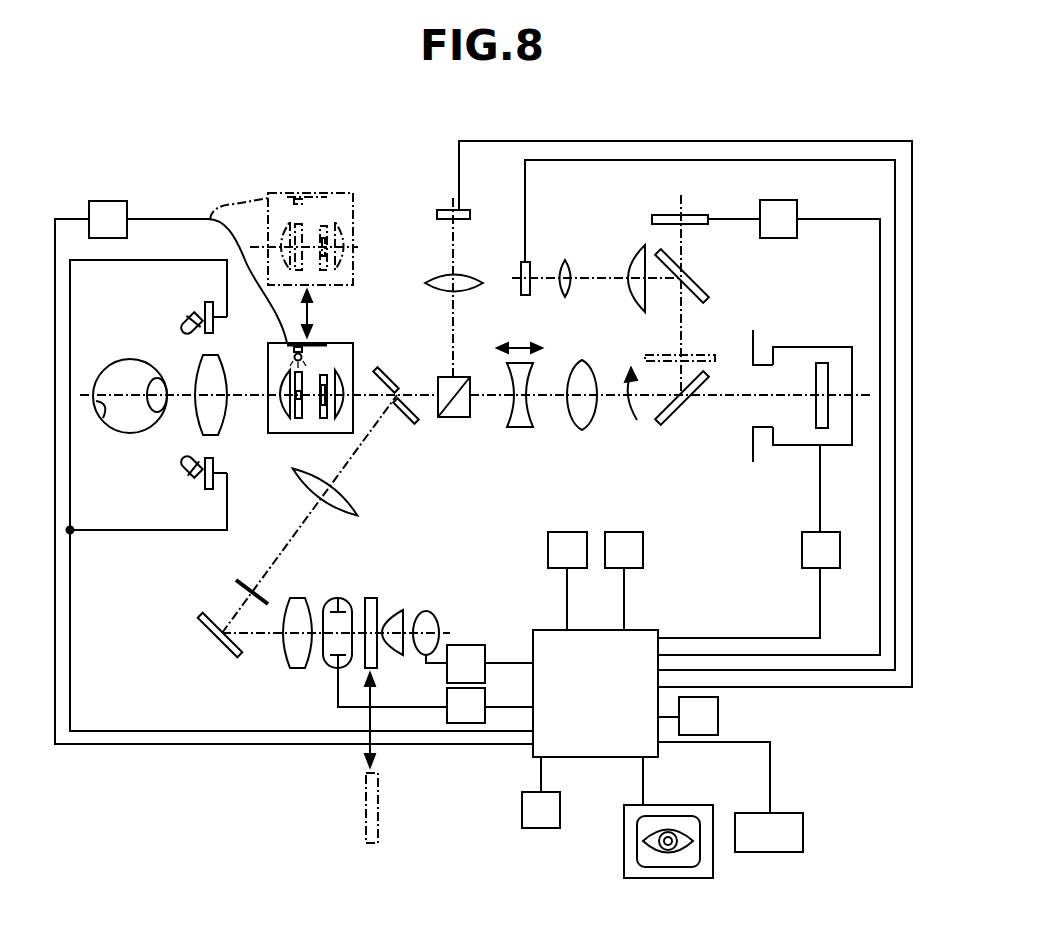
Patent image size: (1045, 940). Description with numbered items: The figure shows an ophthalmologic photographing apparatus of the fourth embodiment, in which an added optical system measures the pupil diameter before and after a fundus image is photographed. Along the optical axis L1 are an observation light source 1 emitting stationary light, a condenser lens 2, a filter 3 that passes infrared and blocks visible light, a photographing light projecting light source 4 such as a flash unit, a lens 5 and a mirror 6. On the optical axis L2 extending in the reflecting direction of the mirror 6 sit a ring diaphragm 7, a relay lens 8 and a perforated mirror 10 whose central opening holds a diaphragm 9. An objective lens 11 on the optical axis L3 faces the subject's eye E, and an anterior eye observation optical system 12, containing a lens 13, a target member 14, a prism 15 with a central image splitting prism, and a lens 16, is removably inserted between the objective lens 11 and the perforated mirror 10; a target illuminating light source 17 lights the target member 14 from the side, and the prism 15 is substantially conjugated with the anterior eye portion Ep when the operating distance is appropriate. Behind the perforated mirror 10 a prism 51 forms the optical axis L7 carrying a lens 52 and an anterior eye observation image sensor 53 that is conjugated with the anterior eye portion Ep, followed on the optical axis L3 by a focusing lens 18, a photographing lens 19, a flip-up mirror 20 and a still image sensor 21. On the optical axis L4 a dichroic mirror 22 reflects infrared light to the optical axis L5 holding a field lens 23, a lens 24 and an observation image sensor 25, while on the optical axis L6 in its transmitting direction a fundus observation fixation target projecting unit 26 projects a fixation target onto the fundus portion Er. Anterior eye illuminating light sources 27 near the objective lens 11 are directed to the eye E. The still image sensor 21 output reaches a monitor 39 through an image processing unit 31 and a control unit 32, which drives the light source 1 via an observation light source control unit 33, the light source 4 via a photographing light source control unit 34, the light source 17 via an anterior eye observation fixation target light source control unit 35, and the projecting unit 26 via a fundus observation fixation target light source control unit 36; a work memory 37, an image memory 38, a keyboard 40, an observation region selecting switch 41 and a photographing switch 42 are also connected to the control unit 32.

The observation light source 1 is at (426, 611).
The condenser lens 2 is at (395, 612).
The filter 3 is at (371, 598).
The photographing light projecting light source 4 is at (340, 598).
The lens 5 is at (298, 598).
The mirror 6 is at (202, 632).
The ring diaphragm 7 is at (238, 585).
The relay lens 8 is at (300, 500).
The diaphragm 9 is at (402, 425).
The perforated mirror 10 is at (390, 368).
The objective lens 11 is at (197, 420).
The anterior eye observation optical system 12 is at (268, 360).
The lens 13 is at (282, 420).
The target member 14 is at (298, 420).
The prism 15 is at (325, 375).
The lens 16 is at (345, 372).
The target illuminating light source 17 is at (300, 343).
The focusing lens 18 is at (520, 427).
The photographing lens 19 is at (583, 430).
The flip-up mirror 20 is at (660, 423).
The still image sensor 21 is at (822, 363).
The dichroic mirror 22 is at (708, 295).
The field lens 23 is at (637, 247).
The lens 24 is at (563, 260).
The observation image sensor 25 is at (527, 295).
The fundus observation fixation target projecting unit 26 is at (698, 215).
The anterior eye illuminating light sources 27 is at (190, 312).
The image processing unit 31 is at (822, 532).
The control unit 32 is at (652, 633).
The observation light source control unit 33 is at (475, 648).
The photographing light source control unit 34 is at (447, 695).
The anterior eye observation fixation target light source control unit 35 is at (111, 200).
The fundus observation fixation target light source control unit 36 is at (797, 216).
The work memory 37 is at (623, 532).
The image memory 38 is at (565, 532).
The monitor 39 is at (666, 878).
The keyboard 40 is at (770, 852).
The observation region selecting switch 41 is at (540, 828).
The photographing switch 42 is at (718, 718).
The prism 51 is at (452, 417).
The lens 52 is at (430, 273).
The anterior eye observation image sensor 53 is at (442, 210).
The subject's eye E is at (128, 360).
The anterior eye portion Ep is at (157, 378).
The fundus portion Er is at (103, 418).
The optical axis L1 is at (462, 633).
The optical axis L2 is at (356, 455).
The optical axis L3 is at (250, 398).
The optical axis L4 is at (681, 342).
The optical axis L5 is at (600, 278).
The optical axis L6 is at (686, 247).
The optical axis L7 is at (456, 318).